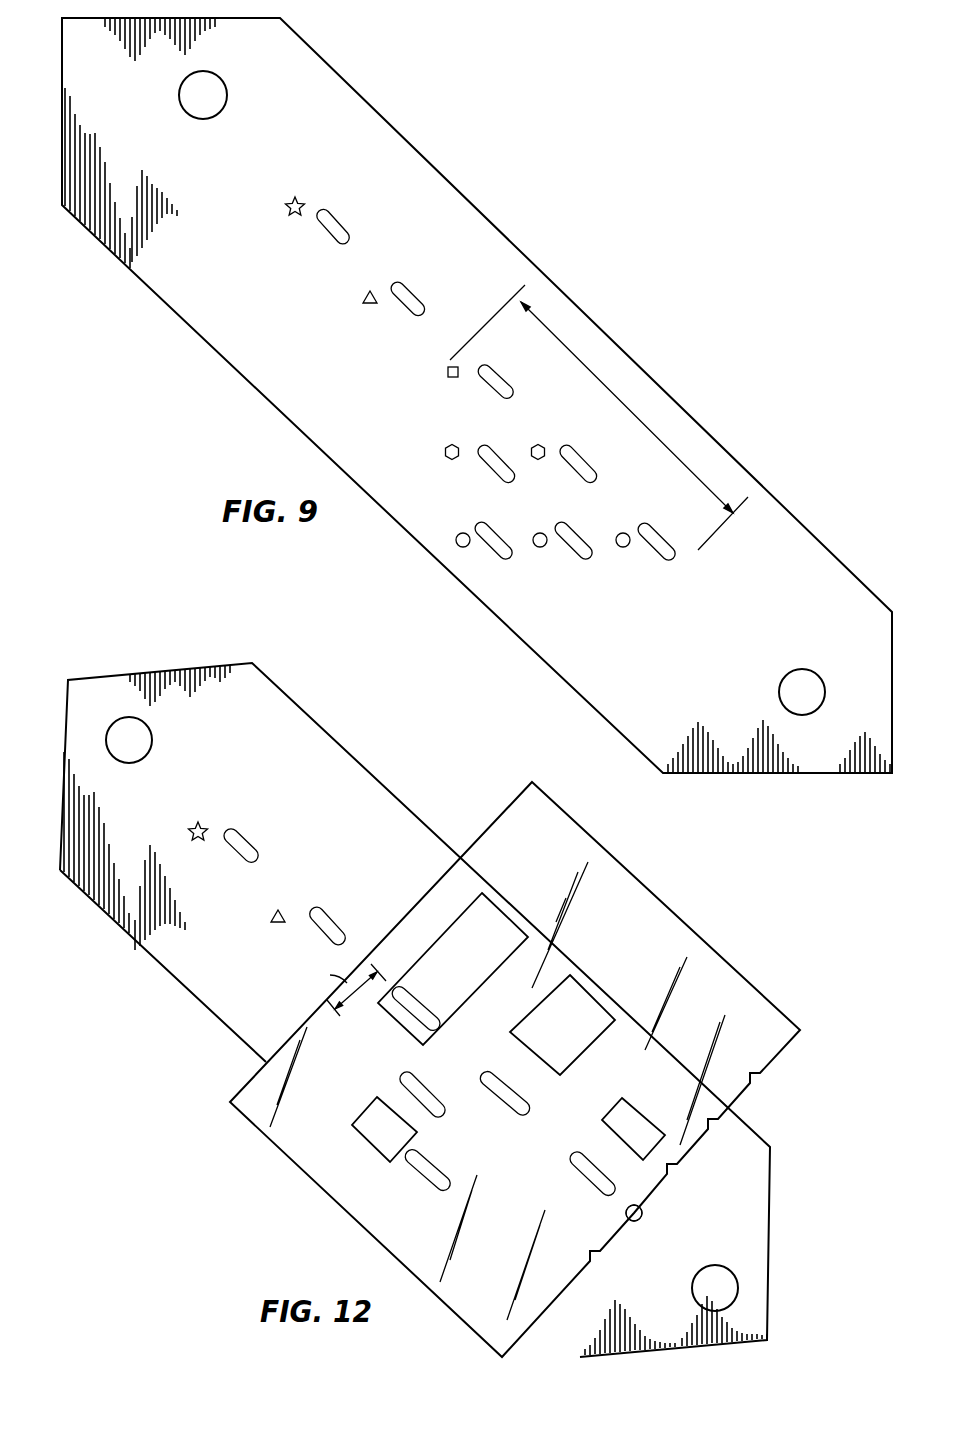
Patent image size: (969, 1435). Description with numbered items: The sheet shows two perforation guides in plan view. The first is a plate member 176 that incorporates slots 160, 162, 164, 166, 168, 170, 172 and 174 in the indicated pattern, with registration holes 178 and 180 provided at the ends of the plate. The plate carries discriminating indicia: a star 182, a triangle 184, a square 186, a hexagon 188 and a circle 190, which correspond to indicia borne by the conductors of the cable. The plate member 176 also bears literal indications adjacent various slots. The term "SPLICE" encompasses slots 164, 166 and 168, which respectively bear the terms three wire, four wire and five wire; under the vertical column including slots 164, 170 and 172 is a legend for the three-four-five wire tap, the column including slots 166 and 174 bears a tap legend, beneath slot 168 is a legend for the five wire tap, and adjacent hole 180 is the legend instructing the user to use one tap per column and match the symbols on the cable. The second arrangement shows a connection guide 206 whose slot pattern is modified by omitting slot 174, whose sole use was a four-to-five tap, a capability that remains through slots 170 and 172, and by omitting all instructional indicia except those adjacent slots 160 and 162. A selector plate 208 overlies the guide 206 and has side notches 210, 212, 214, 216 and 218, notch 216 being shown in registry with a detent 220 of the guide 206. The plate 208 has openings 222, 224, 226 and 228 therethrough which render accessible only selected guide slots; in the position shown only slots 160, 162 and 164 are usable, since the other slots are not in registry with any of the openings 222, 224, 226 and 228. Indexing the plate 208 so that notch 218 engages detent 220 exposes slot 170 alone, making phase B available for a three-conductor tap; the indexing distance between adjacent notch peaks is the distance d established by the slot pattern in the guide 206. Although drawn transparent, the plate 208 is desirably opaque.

In FIG. 9, the slot 160 is at (327, 231).
In FIG. 12, the slot 160 is at (235, 853).
In FIG. 9, the slot 162 is at (410, 316).
In FIG. 12, the slot 162 is at (325, 908).
In FIG. 9, the slot 164 is at (484, 382).
In FIG. 12, the slot 164 is at (419, 1003).
In FIG. 9, the slot 166 is at (560, 443).
In FIG. 12, the slot 166 is at (526, 1115).
In FIG. 9, the slot 168 is at (640, 522).
In FIG. 12, the slot 168 is at (571, 1172).
In FIG. 9, the slot 170 is at (486, 466).
In FIG. 12, the slot 170 is at (430, 1094).
In FIG. 9, the slot 172 is at (486, 550).
In FIG. 12, the slot 172 is at (433, 1165).
In FIG. 9, the slot 174 is at (534, 535).
In FIG. 9, the plate member 176 is at (374, 138).
In FIG. 9, the registration hole 178 is at (186, 112).
In FIG. 12, the registration hole 178 is at (150, 729).
In FIG. 9, the registration hole 180 is at (820, 708).
In FIG. 12, the registration hole 180 is at (737, 1282).
In FIG. 9, the discriminating indicium 182 is at (286, 207).
In FIG. 12, the discriminating indicium 182 is at (187, 832).
In FIG. 9, the discriminating indicium 184 is at (362, 300).
In FIG. 12, the discriminating indicium 184 is at (270, 918).
In FIG. 9, the discriminating indicium 186 is at (447, 372).
In FIG. 9, the discriminating indicium 188 is at (418, 454).
In FIG. 9, the discriminating indicium 190 is at (385, 541).
In FIG. 12, the connection guide 206 is at (342, 747).
In FIG. 12, the selector plate 208 is at (632, 873).
In FIG. 12, the side notch 210 is at (759, 1070).
In FIG. 12, the side notch 212 is at (718, 1123).
In FIG. 12, the side notch 214 is at (678, 1166).
In FIG. 12, the side notch 216 is at (626, 1212).
In FIG. 12, the side notch 218 is at (595, 1258).
In FIG. 12, the detent 220 is at (641, 1218).
In FIG. 12, the opening 222 is at (502, 908).
In FIG. 12, the opening 224 is at (590, 994).
In FIG. 12, the opening 226 is at (633, 1108).
In FIG. 12, the opening 228 is at (362, 1110).